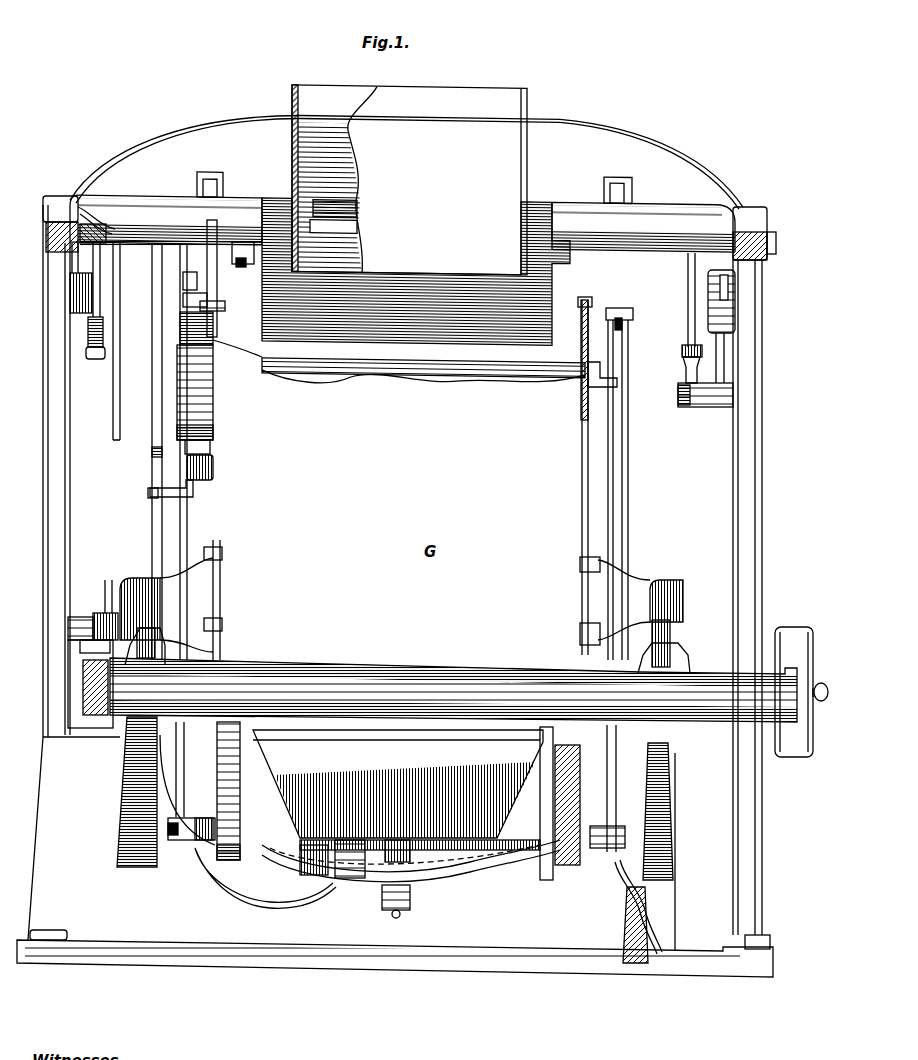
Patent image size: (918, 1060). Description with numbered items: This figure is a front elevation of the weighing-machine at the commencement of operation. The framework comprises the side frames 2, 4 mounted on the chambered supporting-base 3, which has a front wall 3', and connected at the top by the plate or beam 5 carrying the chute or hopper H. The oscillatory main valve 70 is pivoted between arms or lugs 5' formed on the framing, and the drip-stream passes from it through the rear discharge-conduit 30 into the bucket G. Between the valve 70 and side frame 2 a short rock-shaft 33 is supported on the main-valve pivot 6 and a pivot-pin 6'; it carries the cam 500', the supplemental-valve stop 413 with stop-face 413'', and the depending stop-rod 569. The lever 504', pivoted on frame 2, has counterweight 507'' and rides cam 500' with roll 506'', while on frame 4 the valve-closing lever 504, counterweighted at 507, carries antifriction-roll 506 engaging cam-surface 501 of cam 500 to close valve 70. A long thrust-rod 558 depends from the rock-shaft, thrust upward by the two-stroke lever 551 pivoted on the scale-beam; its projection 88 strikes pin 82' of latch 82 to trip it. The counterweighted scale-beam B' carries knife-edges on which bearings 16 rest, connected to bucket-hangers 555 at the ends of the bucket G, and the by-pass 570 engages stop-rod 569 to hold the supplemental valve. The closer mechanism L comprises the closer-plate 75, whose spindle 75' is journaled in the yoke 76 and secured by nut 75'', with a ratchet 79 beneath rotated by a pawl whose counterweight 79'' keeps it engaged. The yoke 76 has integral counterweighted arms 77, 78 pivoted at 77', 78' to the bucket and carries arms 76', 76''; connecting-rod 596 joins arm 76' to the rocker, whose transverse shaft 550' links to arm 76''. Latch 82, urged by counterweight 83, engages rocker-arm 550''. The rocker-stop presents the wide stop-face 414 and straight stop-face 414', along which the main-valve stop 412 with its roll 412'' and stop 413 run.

The side frame 2 is at (58, 538).
The supporting-base 3 is at (395, 953).
The front wall of the base 3' is at (428, 901).
The side frame 4 is at (755, 516).
The plate or beam 5 is at (406, 182).
The arms or lugs 5' is at (764, 233).
The pivot for the main valve 6 is at (74, 211).
The pivot-pin 6' is at (257, 245).
The bearings 16 is at (153, 651).
The rear discharge-outlet or conduit 30 is at (355, 232).
The rock-shaft 33 is at (148, 242).
The main valve 70 is at (557, 289).
The closer 75 is at (307, 874).
The spindle or pivot 75' is at (407, 924).
The nut 75'' is at (412, 901).
The yoke 76 is at (418, 807).
The arm of the yoke 76' is at (191, 814).
The arm of the closer-supporting yoke 76'' is at (601, 788).
The counterweighted arm or blade 77 is at (213, 791).
The pivot 77' is at (166, 799).
The counterweighted arm or blade 78 is at (580, 805).
The pivot 78' is at (604, 851).
The ratchet 79 is at (411, 825).
The counterweight 79'' is at (347, 879).
The latch 82 is at (199, 497).
The pin on the latch 82' is at (139, 503).
The counterweight 83 is at (206, 469).
The projection 88 is at (157, 456).
The stop for the main valve 412 is at (229, 278).
The stop 412'' is at (233, 304).
The supplemental-valve stop 413 is at (196, 326).
The stop-face 413'' is at (162, 313).
The stop-face 414 is at (219, 392).
The stop-face 414' is at (227, 335).
The cam 500 is at (672, 300).
The cam 500' is at (111, 204).
The cam-surface 501 is at (689, 348).
The lever 504 is at (738, 370).
The lever 504' is at (121, 309).
The antifriction-roll 506 is at (669, 354).
The clamp 506'' is at (122, 371).
The counterweight 507 is at (753, 301).
The bolt 507'' is at (91, 318).
The transverse shaft 550' is at (423, 366).
The rocker-arm 550'' is at (231, 450).
The two-stroke lever 551 is at (110, 678).
The bucket-hangers 555 is at (167, 590).
The thrust or connecting rod 558 is at (157, 483).
The stop-rod 569 is at (112, 428).
The by-pass 570 is at (112, 589).
The connecting-rod 596 is at (180, 453).
The scale-beam B' is at (453, 681).
The chute or hopper H is at (520, 113).
The closer mechanism L is at (383, 840).